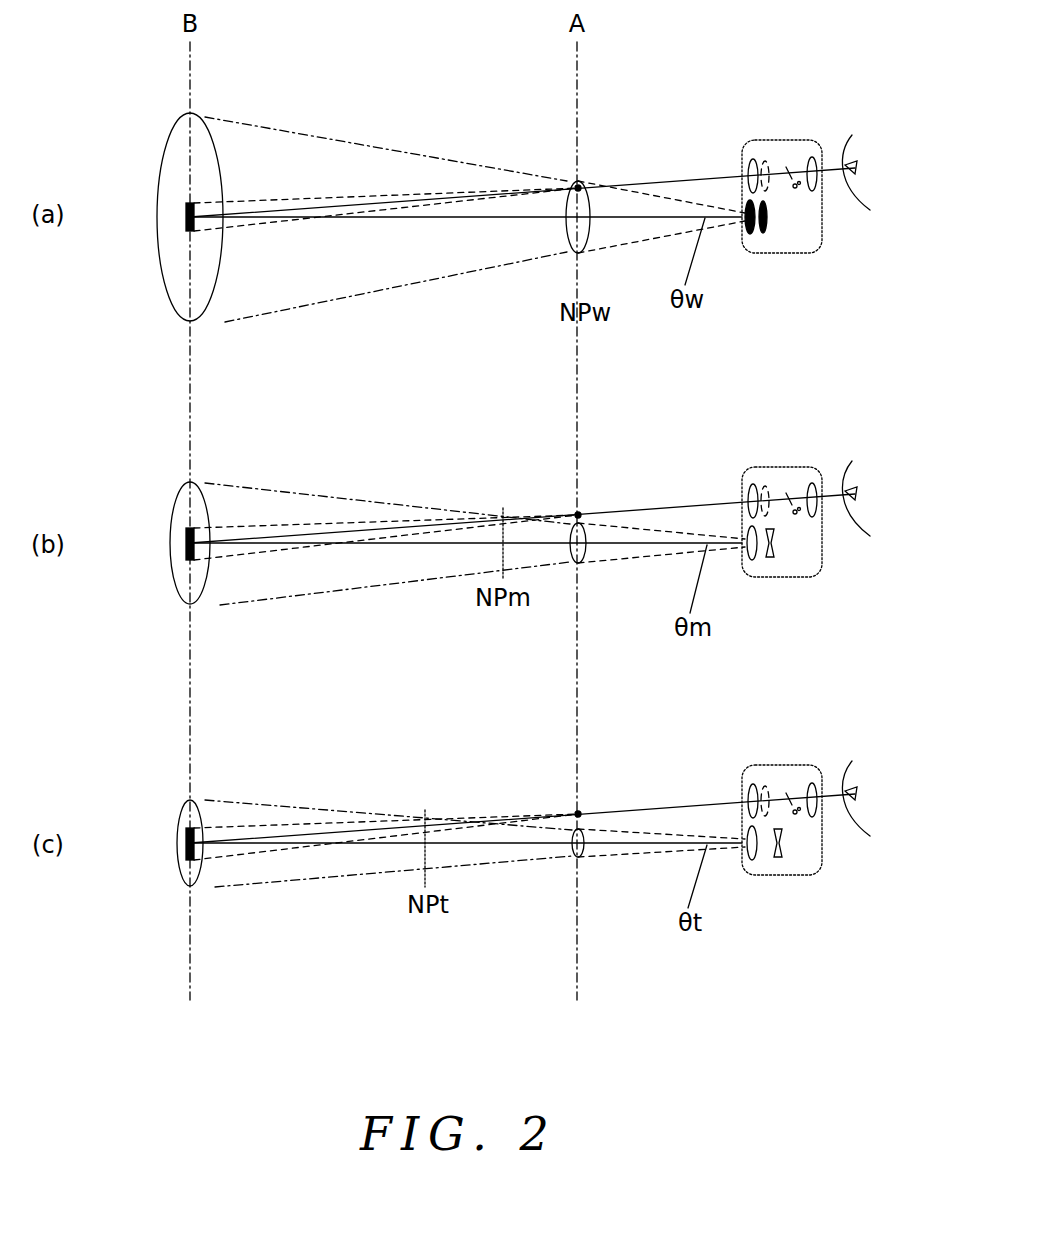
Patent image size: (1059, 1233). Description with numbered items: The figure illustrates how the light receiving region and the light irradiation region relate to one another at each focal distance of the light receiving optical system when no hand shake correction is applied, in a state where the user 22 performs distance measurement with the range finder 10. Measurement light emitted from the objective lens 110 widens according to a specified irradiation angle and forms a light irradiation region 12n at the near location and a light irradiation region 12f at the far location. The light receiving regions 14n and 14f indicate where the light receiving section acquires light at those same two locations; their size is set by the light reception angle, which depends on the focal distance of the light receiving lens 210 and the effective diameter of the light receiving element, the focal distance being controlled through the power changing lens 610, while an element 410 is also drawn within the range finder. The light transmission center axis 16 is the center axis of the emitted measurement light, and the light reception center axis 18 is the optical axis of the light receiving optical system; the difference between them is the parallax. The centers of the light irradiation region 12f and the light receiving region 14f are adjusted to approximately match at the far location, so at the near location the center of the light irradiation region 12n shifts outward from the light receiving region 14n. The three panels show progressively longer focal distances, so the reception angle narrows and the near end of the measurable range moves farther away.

The range finder 10 is at (810, 132).
The light irradiation region 12f is at (184, 216).
The light receiving region 14f is at (205, 302).
The light irradiation region 12n is at (580, 181).
The light receiving region 14n is at (588, 248).
The light transmission center axis 16 is at (668, 181).
The light reception center axis 18 is at (663, 220).
The user 22 is at (860, 130).
The objective lens 110 is at (751, 158).
The finder lens element 410 is at (764, 160).
The light receiving lens 210 is at (747, 232).
The power changing lens 610 is at (750, 236).